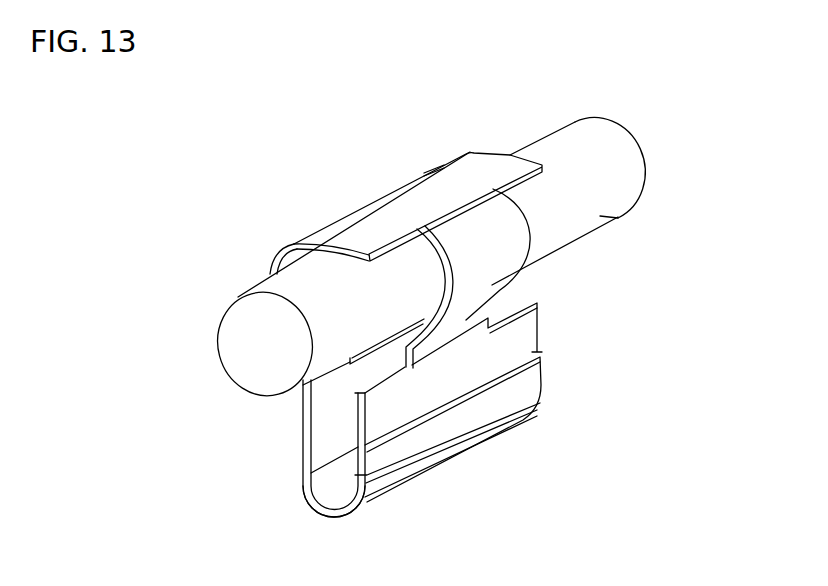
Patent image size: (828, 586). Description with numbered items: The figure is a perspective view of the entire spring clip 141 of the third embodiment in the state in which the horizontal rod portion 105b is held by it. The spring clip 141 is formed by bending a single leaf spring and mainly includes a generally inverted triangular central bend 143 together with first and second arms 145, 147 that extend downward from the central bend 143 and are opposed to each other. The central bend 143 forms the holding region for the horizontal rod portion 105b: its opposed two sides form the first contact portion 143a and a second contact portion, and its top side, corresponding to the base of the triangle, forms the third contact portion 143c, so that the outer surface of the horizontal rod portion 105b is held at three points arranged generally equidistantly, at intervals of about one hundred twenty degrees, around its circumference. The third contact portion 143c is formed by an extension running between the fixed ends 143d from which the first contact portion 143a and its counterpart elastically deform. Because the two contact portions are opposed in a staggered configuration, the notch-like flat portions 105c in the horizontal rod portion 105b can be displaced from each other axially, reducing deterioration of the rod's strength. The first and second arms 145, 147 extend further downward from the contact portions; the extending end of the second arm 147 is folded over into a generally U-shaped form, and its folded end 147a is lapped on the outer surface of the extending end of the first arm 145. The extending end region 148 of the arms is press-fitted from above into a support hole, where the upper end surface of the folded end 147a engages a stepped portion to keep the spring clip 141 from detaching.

The horizontal rod portion 105b is at (592, 126).
The flat portion 105c is at (413, 233).
The spring clip 141 is at (424, 291).
The central bend 143 is at (424, 291).
The first contact portion 143a is at (480, 297).
The third contact portion 143c is at (400, 207).
The fixed end 143d is at (292, 244).
The first arm 145 is at (440, 392).
The second arm 147 is at (291, 465).
The folded end 147a is at (507, 403).
The extending end region 148 is at (316, 500).